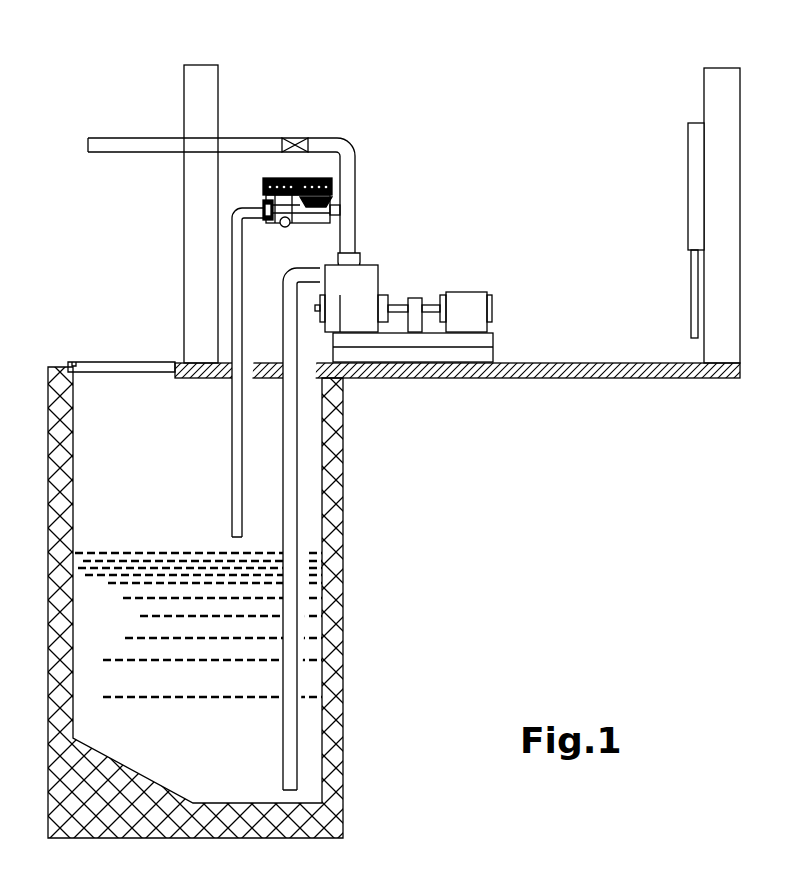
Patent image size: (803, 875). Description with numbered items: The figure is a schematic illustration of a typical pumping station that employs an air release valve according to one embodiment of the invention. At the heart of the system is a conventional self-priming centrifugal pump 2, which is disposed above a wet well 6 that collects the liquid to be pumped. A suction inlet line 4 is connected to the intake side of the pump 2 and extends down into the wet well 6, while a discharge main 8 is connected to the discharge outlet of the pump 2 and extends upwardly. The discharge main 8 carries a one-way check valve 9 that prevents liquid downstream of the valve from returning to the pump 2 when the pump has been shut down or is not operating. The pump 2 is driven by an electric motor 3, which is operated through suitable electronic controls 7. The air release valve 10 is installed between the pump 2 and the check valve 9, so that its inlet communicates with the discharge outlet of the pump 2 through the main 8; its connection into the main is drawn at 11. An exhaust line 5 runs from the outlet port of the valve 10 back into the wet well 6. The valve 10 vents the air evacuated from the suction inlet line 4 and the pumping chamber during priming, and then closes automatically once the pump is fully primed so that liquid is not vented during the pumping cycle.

The self-priming centrifugal pump 2 is at (370, 282).
The electric motor 3 is at (485, 300).
The suction inlet line 4 is at (292, 510).
The exhaust line 5 is at (233, 254).
The wet well 6 is at (158, 493).
The electronic controls 7 is at (688, 212).
The discharge main 8 is at (355, 165).
The one-way check valve 9 is at (297, 138).
The air release valve 10 is at (330, 198).
The connecting line 11 is at (340, 225).